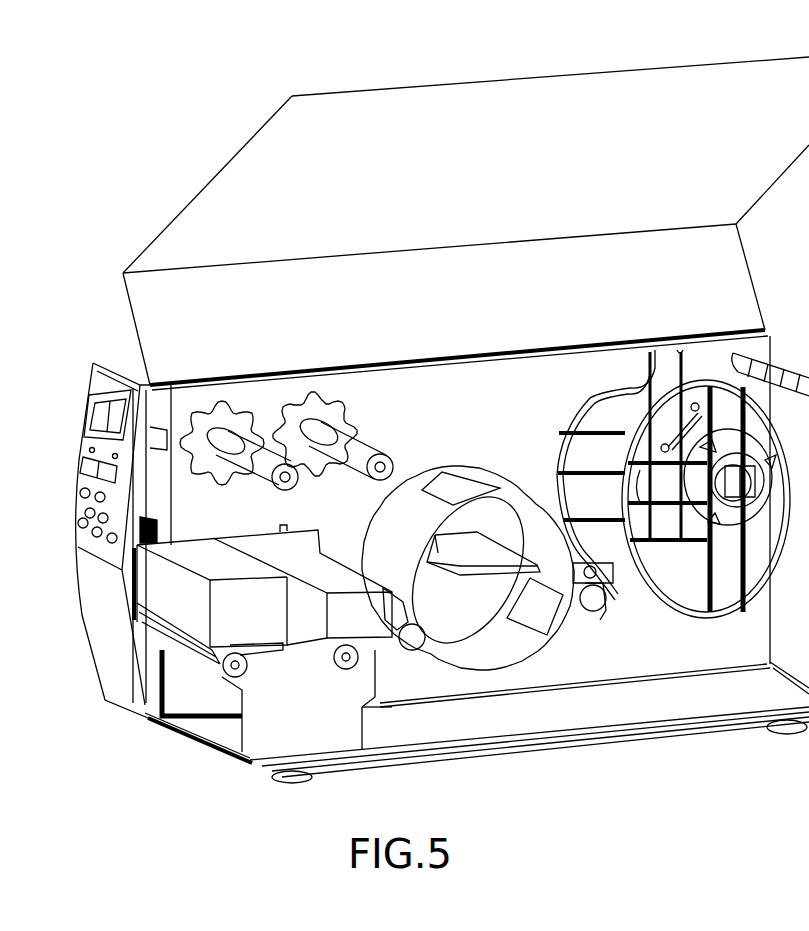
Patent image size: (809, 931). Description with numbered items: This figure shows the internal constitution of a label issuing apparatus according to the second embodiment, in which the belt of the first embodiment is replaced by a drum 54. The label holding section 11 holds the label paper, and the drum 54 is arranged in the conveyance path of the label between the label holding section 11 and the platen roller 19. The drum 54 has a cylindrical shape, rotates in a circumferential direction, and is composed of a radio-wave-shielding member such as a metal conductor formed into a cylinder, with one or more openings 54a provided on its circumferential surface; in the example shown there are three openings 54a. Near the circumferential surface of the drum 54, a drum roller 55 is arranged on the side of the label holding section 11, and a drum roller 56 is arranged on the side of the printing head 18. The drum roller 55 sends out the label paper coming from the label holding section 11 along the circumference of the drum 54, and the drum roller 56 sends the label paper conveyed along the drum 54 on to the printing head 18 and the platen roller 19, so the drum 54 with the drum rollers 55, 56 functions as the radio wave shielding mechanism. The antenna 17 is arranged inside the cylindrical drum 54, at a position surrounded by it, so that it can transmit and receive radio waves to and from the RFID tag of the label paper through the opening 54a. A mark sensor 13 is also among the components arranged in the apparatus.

The label holding section 11 is at (597, 424).
The mark sensor 13 is at (607, 589).
The antenna 17 is at (475, 567).
The printing head 18 is at (340, 553).
The platen roller 19 is at (322, 636).
The drum 54 is at (512, 488).
The opening 54a is at (448, 483).
The drum roller 55 is at (420, 650).
The drum roller 56 is at (600, 618).